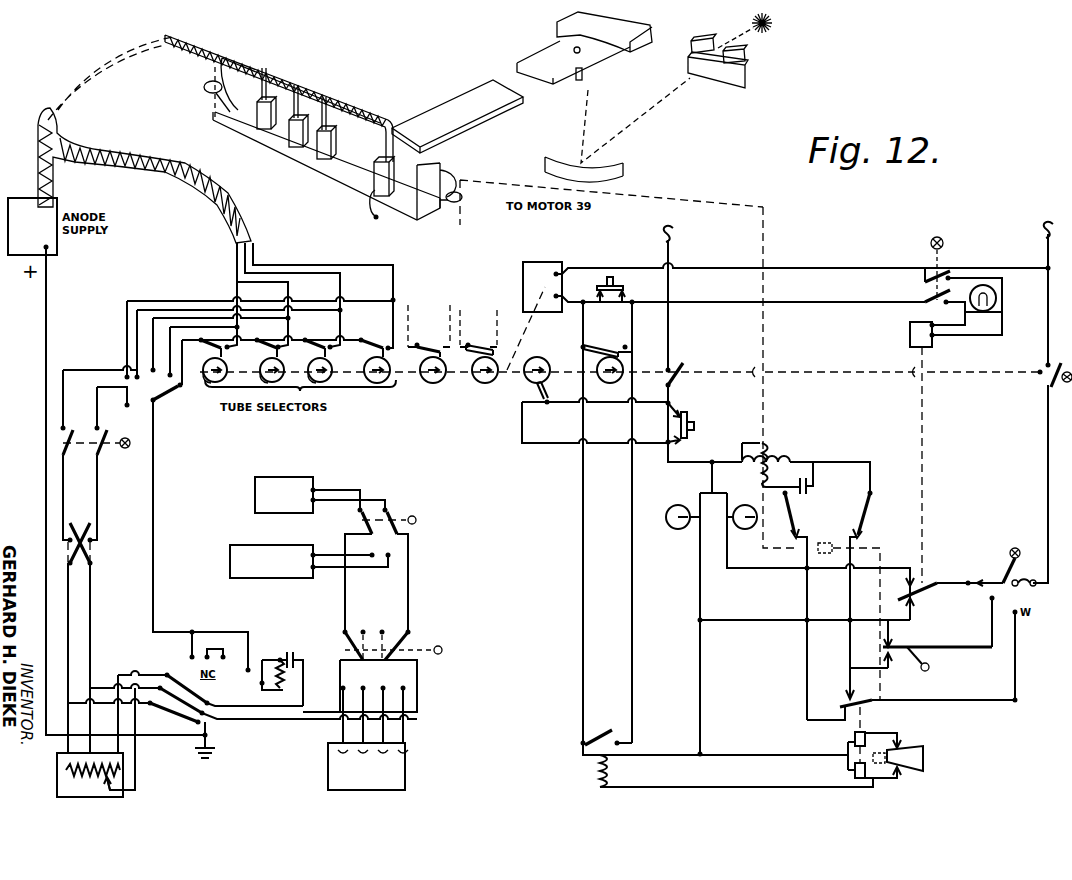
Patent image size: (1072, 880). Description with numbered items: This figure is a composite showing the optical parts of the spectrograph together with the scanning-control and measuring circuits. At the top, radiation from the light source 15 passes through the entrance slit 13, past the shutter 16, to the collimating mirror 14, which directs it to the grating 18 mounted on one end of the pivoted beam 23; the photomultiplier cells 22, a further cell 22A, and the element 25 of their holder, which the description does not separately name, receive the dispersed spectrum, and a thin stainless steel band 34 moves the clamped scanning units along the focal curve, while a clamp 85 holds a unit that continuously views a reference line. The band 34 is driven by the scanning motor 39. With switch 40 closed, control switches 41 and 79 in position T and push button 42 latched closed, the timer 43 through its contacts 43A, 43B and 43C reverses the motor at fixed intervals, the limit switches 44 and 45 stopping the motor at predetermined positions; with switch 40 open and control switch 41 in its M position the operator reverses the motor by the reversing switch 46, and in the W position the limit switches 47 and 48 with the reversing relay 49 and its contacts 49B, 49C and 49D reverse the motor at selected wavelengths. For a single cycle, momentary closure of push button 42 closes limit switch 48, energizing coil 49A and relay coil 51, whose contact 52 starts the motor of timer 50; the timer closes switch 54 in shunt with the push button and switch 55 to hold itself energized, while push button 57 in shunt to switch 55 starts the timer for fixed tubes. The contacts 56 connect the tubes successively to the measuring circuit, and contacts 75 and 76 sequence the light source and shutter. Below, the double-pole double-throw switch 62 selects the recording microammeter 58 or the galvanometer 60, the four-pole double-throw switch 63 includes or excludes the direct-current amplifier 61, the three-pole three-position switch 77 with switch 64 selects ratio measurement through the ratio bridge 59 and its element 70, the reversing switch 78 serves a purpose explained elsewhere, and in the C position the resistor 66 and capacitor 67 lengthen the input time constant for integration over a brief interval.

The entrance slit 13 is at (706, 48).
The collimating mirror 14 is at (625, 170).
The light source 15 is at (770, 27).
The shutter 16 is at (718, 78).
The grating 18 is at (556, 33).
The photomultiplier cell 22 is at (321, 162).
The photo tube 22A is at (375, 197).
The pivoted beam 23 is at (437, 113).
The tube holder 25 is at (220, 128).
The band 34 is at (418, 204).
The clamp 85 is at (377, 218).
The scanning motor 39 is at (806, 461).
The switch 40 is at (963, 286).
The control switch 41 is at (1004, 567).
The push button 42 is at (692, 421).
The timer 43 is at (929, 325).
The timer contact 43A is at (913, 620).
The timer contact 43B is at (920, 596).
The timer contact 43C is at (913, 568).
The limit switch 44 is at (803, 606).
The limit switch 45 is at (873, 594).
The reversing switch 46 is at (922, 634).
The limit switch 47 is at (904, 749).
The limit switch 48 is at (899, 769).
The reversing relay 49 is at (853, 732).
The relay coil 49A is at (855, 773).
The relay contact 49B is at (833, 689).
The relay contact 49C is at (845, 716).
The relay contact 49D is at (874, 702).
The timer 50 is at (545, 272).
The relay coil 51 is at (715, 765).
The relay contact 52 is at (607, 726).
The switch 54 is at (536, 406).
The switch 55 is at (607, 354).
The contacts 56 is at (288, 355).
The push button 57 is at (624, 288).
The recording microammeter 58 is at (258, 578).
The ratio bridge 59 is at (57, 773).
The galvanometer 60 is at (256, 507).
The direct-current amplifier 61 is at (405, 770).
The double-pole double-throw switch 62 is at (380, 512).
The four-pole double-throw switch 63 is at (398, 642).
The switch 64 is at (96, 455).
The resistor 66 is at (263, 667).
The capacitor 67 is at (292, 650).
The wiper contact 70 is at (112, 783).
The timer contact 75 is at (483, 335).
The timer contact 76 is at (424, 340).
The three-pole three-position switch 77 is at (178, 698).
The reversing switch 78 is at (98, 638).
The control switch 79 is at (160, 407).